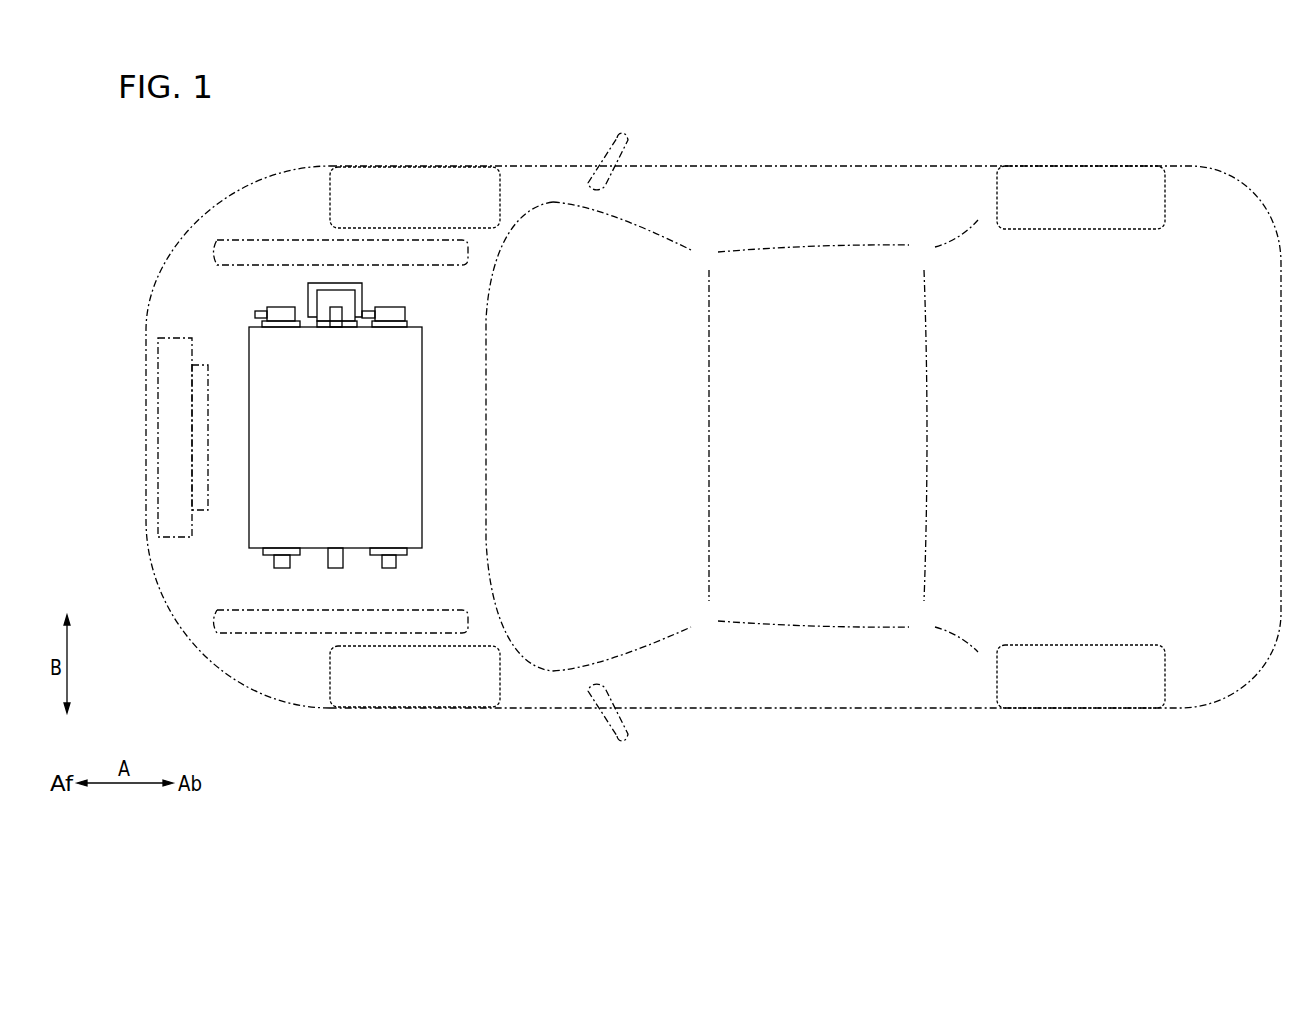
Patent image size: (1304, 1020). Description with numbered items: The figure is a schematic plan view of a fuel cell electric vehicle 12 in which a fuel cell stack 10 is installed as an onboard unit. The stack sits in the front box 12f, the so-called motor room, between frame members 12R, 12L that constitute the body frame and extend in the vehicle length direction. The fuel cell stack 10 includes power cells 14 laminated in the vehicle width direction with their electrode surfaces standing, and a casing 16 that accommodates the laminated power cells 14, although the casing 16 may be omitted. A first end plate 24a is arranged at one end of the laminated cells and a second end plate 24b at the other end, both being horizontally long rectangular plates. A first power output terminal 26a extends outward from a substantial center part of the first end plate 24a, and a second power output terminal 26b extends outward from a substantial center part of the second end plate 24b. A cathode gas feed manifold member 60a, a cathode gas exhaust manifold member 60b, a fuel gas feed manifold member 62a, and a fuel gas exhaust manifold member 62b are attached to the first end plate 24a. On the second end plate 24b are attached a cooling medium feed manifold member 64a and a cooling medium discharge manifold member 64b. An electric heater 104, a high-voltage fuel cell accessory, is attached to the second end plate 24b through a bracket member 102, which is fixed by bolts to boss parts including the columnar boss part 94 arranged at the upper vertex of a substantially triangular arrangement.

The fuel cell stack 10 is at (381, 457).
The fuel cell electric vehicle 12 is at (687, 411).
The front box 12f is at (172, 262).
The frame member 12R is at (241, 238).
The frame member 12L is at (243, 612).
The power cell 14 is at (402, 482).
The casing 16 is at (396, 437).
The first end plate 24a is at (416, 550).
The second end plate 24b is at (422, 324).
The first power output terminal 26a is at (335, 568).
The second power output terminal 26b is at (336, 328).
The cathode gas feed manifold member 60a is at (436, 655).
The cathode gas exhaust manifold member 60b is at (281, 568).
The fuel gas feed manifold member 62a is at (248, 655).
The fuel gas exhaust manifold member 62b is at (390, 568).
The cooling medium feed manifold member 64a is at (392, 313).
The cooling medium discharge manifold member 64b is at (285, 310).
The boss part 94 is at (346, 322).
The bracket member 102 is at (333, 298).
The electric heater 104 is at (303, 290).